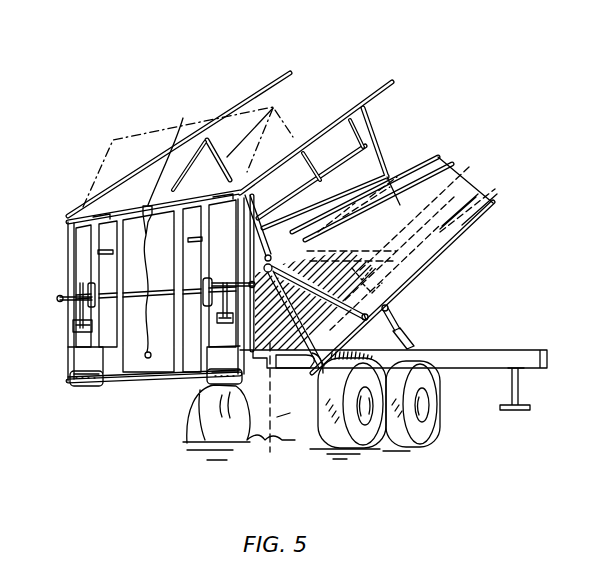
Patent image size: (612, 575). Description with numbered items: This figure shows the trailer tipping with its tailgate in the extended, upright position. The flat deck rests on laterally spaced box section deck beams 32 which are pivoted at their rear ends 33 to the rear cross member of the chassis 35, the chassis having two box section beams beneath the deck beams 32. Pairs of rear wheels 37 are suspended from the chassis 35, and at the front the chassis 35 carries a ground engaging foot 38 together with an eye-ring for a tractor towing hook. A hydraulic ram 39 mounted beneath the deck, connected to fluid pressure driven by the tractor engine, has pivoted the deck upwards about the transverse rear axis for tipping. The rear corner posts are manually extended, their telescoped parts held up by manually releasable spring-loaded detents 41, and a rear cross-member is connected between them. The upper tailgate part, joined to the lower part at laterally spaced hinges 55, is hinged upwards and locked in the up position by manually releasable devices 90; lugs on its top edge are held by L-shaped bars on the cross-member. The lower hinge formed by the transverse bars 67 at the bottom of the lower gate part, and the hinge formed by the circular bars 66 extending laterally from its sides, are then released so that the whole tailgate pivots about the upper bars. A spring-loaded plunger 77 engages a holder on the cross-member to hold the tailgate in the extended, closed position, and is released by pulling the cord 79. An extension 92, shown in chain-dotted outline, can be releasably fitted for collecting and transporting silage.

The box section deck beams 32 is at (438, 224).
The rear ends 33 is at (282, 413).
The chassis 35 is at (462, 336).
The rear wheels 37 is at (380, 464).
The ground engaging foot 38 is at (506, 412).
The hydraulic ram 39 is at (397, 320).
The spring-loaded detent 41 is at (280, 258).
The hinges 55 is at (88, 285).
The circular bars 66 is at (62, 300).
The transverse bars 67 is at (75, 388).
The spring-loaded plunger 77 is at (167, 231).
The cord 79 is at (135, 372).
The manually releasable devices 90 is at (76, 330).
The extension 92 is at (98, 158).